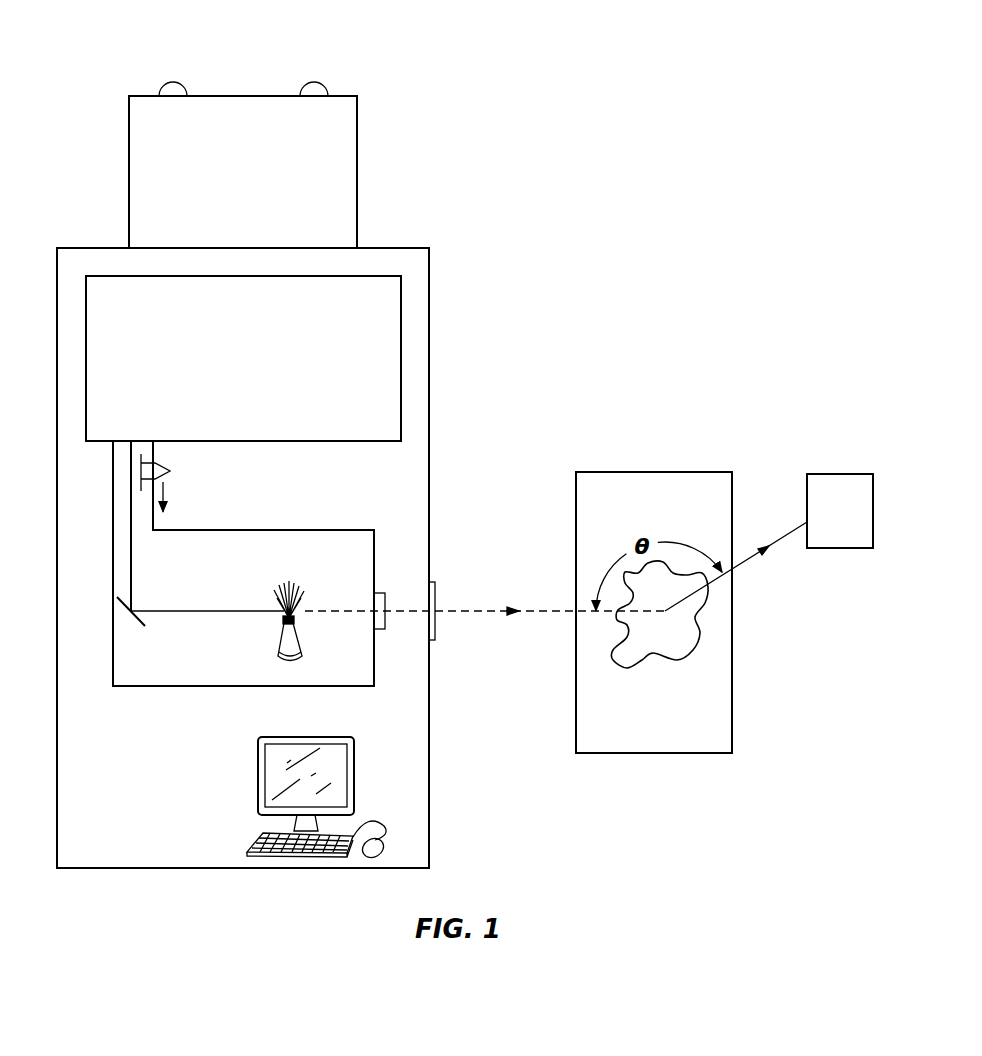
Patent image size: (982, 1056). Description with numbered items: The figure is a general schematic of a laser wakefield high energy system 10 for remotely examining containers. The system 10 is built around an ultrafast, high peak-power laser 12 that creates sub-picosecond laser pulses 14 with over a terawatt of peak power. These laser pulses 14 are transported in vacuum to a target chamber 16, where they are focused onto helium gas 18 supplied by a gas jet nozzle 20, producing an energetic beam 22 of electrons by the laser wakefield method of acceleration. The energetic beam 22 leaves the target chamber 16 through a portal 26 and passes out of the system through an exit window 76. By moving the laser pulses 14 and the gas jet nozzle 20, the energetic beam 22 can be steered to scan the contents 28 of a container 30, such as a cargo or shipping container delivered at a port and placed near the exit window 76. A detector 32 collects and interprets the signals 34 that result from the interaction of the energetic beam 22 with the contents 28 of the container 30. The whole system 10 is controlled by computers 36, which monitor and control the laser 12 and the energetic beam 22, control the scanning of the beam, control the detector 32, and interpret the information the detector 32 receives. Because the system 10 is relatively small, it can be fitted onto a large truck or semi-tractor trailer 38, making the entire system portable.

The high energy system 10 is at (131, 834).
The laser 12 is at (234, 371).
The laser pulses 14 is at (169, 470).
The target chamber 16 is at (341, 561).
The helium gas 18 is at (266, 599).
The gas jet nozzle 20 is at (283, 640).
The energetic beam 22 is at (539, 607).
The portal 26 is at (385, 600).
The contents 28 is at (650, 651).
The container 30 is at (601, 517).
The detector 32 is at (826, 526).
The signals 34 is at (787, 533).
The computers 36 is at (349, 763).
The semi-tractor trailer 38 is at (233, 182).
The exit window 76 is at (436, 590).